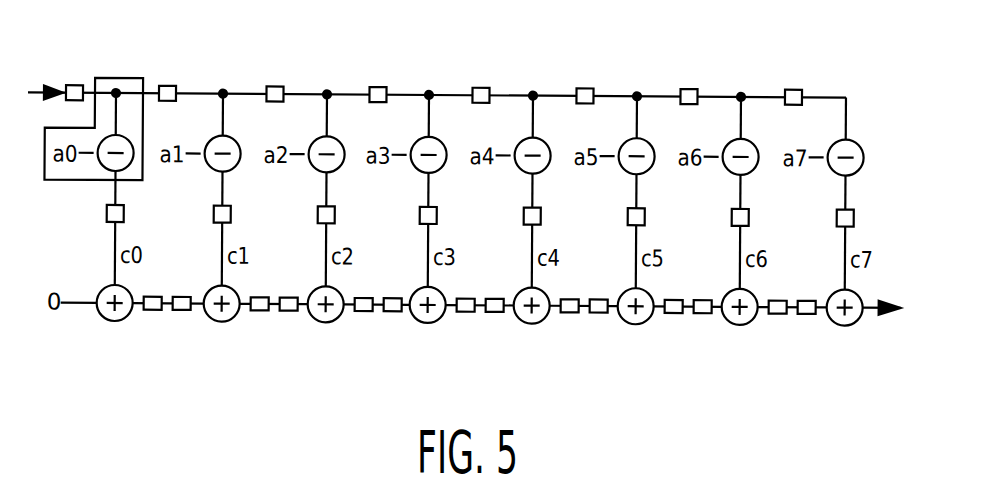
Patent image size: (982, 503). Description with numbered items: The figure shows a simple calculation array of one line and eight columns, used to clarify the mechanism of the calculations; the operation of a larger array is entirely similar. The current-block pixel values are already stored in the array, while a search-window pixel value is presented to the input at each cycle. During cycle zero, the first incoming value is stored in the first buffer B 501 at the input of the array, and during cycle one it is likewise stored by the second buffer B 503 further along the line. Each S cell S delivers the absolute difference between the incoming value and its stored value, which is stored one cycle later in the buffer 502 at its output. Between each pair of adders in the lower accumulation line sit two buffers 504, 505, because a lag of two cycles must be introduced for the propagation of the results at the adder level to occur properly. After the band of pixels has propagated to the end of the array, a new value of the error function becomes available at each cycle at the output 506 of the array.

The first buffer B 501 is at (73, 85).
The buffer 502 is at (126, 217).
The second buffer B 503 is at (166, 85).
The buffers 504 is at (152, 312).
The delay element 505 is at (187, 312).
The output of the array 506 is at (867, 312).
The S cell S is at (73, 184).